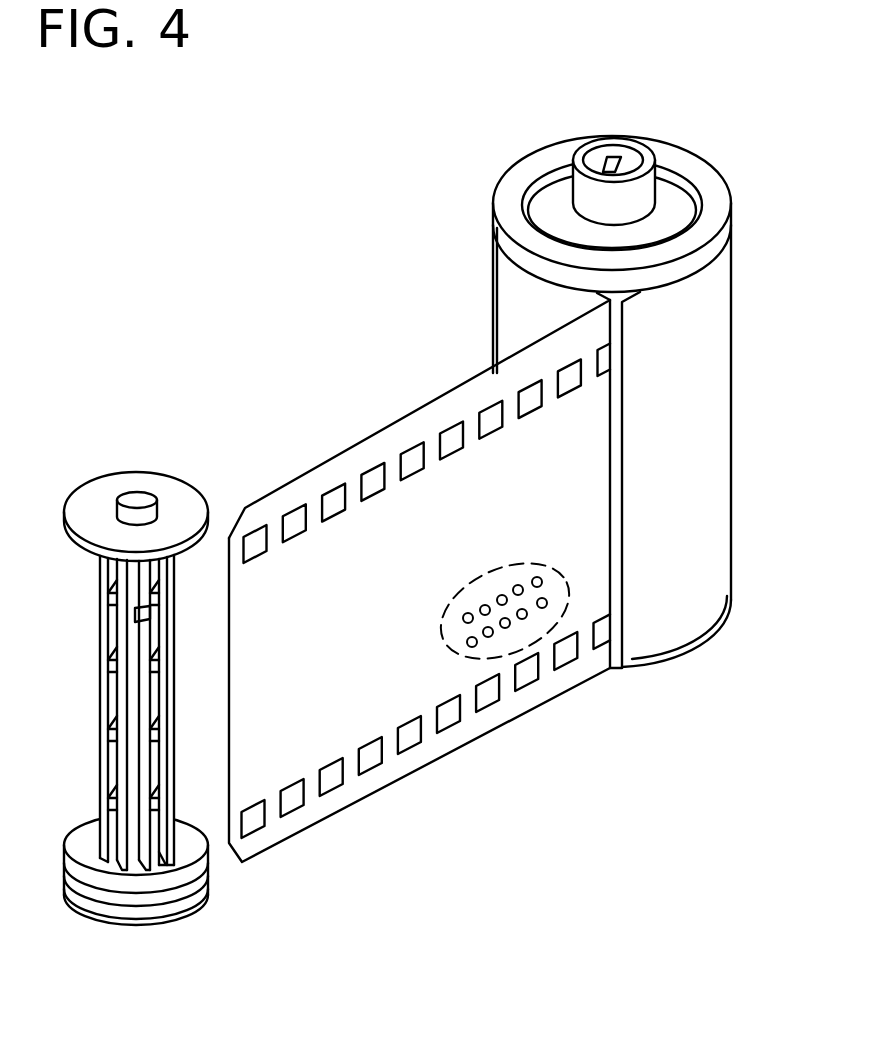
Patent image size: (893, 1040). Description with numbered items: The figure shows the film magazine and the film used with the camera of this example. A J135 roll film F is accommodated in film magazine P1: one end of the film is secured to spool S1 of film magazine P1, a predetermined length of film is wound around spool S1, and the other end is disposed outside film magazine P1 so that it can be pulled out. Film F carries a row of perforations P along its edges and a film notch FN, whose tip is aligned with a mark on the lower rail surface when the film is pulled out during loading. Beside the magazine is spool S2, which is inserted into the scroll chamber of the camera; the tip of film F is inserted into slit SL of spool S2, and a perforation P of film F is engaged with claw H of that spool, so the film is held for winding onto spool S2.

The spool S1 is at (633, 197).
The film magazine P1 is at (712, 320).
The film F is at (328, 570).
The perforation P is at (410, 458).
The film notch FN is at (475, 658).
The spool S2 is at (97, 503).
The claw H is at (133, 614).
The slit SL is at (130, 760).